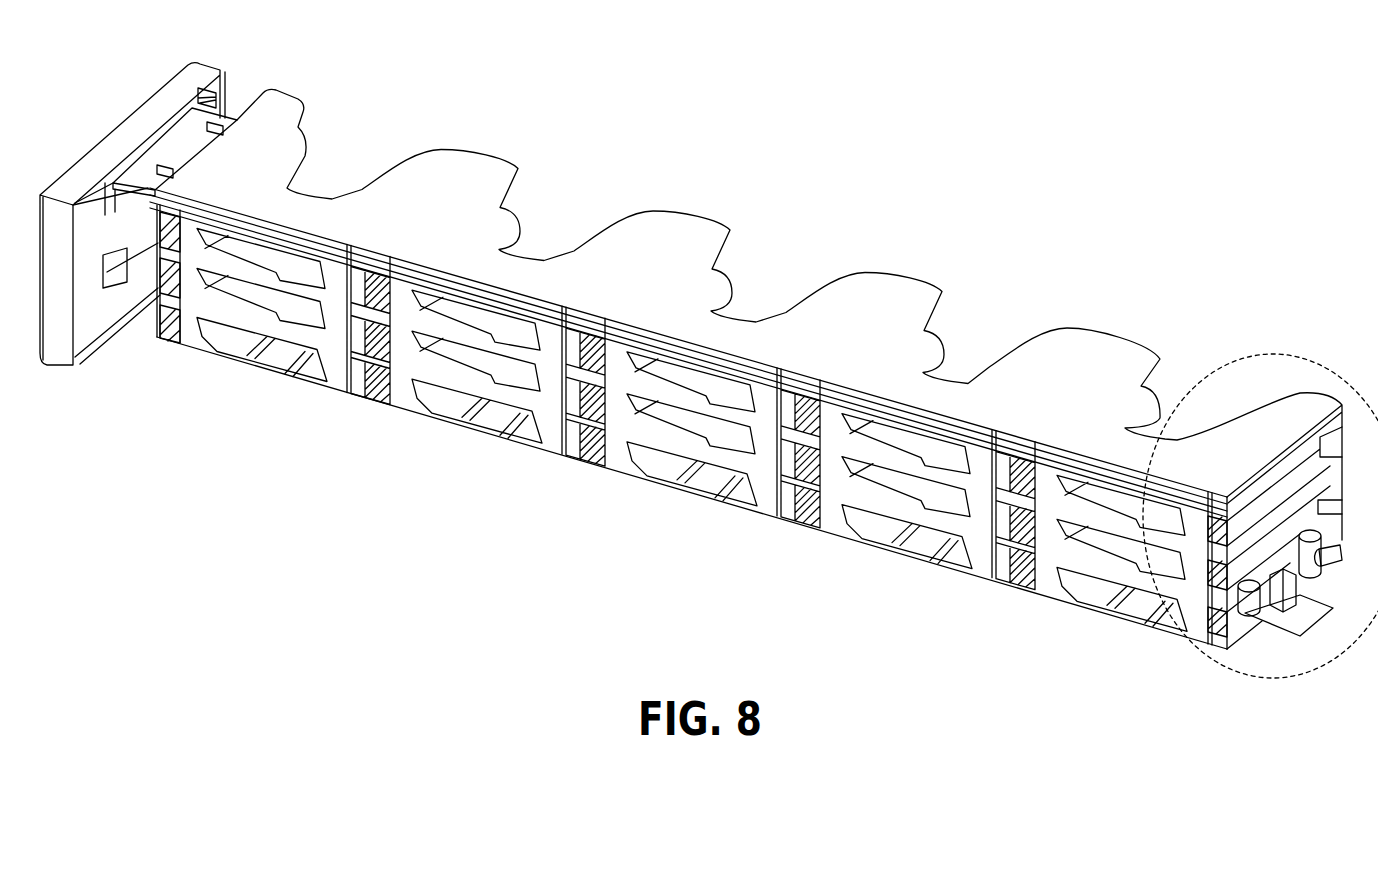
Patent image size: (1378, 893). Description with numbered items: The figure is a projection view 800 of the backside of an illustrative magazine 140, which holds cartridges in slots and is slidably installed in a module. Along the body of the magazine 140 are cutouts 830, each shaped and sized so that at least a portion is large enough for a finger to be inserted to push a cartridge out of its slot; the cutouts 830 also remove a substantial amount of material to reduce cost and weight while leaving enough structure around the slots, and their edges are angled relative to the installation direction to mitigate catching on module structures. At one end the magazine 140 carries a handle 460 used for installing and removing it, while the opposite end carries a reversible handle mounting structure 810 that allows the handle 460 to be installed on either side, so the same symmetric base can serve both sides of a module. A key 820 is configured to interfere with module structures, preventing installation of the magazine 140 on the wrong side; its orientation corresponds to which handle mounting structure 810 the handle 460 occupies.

The projection view 800 is at (1020, 124).
The magazine 140 is at (487, 163).
The handle 460 is at (80, 356).
The key 820 is at (783, 367).
The cutouts 830 is at (863, 527).
The reversible handle mounting structure 810 is at (1220, 665).